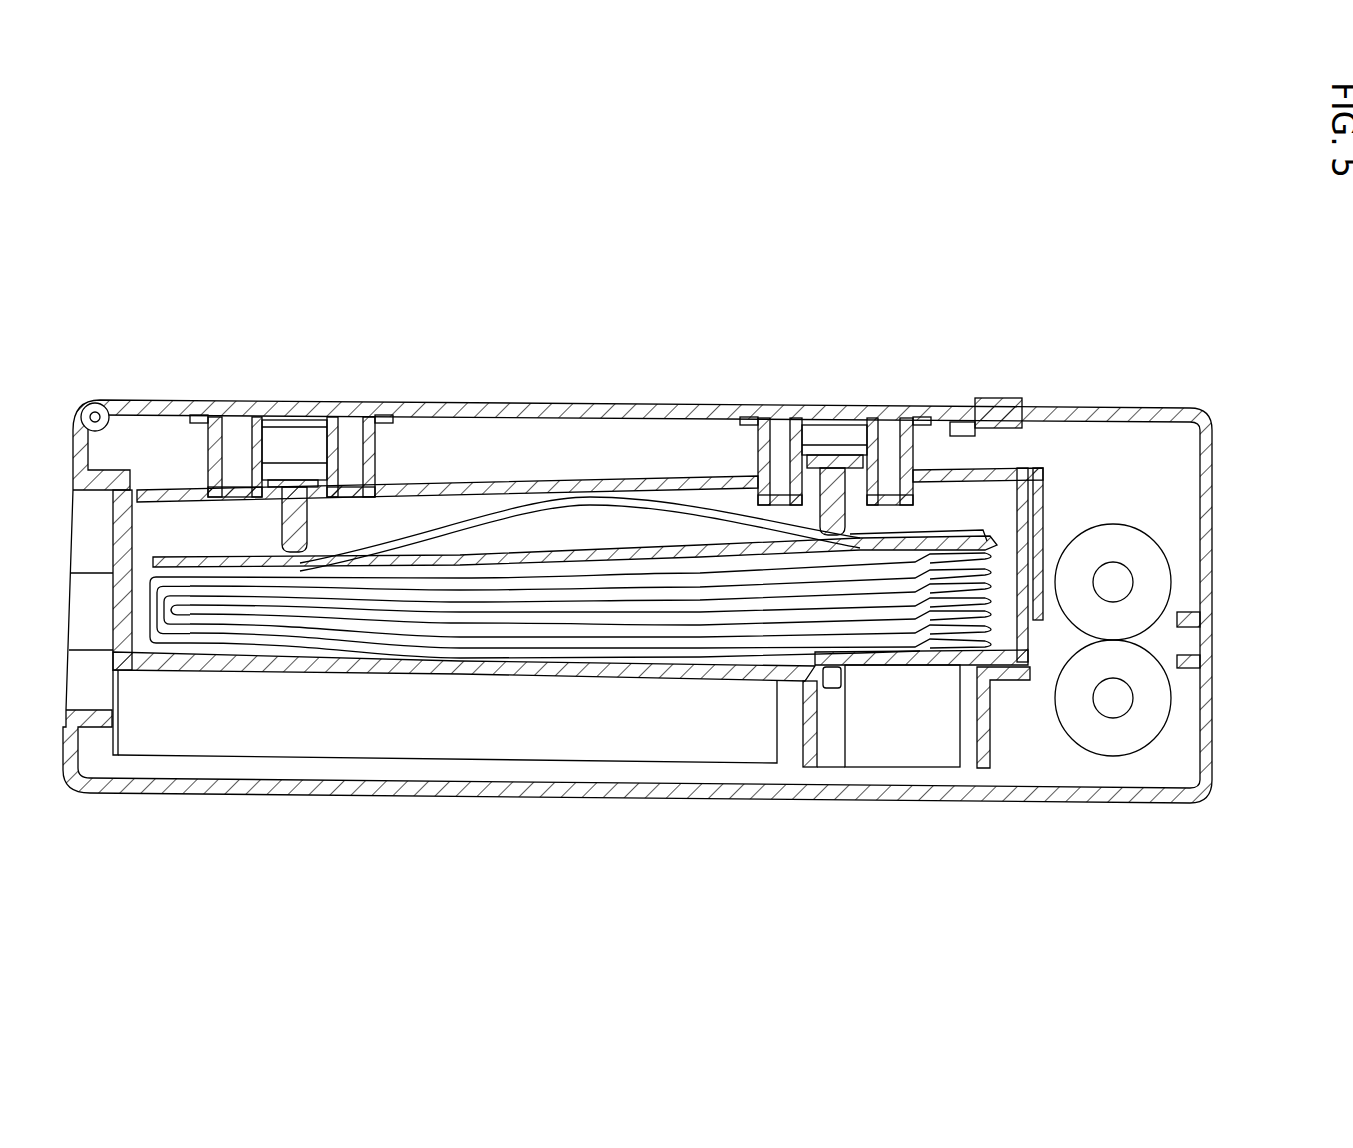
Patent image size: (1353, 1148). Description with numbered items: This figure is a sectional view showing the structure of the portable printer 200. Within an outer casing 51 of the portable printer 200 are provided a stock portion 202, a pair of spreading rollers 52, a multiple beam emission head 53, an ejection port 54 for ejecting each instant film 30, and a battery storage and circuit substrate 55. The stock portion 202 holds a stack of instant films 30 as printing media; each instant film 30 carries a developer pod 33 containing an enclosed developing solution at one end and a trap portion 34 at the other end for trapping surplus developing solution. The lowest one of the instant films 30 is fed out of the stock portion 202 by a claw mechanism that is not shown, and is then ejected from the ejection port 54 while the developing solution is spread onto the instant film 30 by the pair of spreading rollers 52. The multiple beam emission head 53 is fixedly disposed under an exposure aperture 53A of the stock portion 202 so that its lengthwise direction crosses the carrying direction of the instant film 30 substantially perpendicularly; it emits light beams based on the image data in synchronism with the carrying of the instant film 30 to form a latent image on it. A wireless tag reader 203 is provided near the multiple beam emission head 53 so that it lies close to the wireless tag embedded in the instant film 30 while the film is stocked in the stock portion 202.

The portable printer 200 is at (983, 349).
The stock portion 202 is at (705, 470).
The instant film 30 is at (466, 585).
The developer pod 33 is at (933, 652).
The trap portion 34 is at (170, 630).
The outer casing 51 is at (498, 797).
The pair of spreading rollers 52 is at (1118, 737).
The multiple beam emission head 53 is at (917, 743).
The exposure aperture 53A is at (948, 660).
The ejection port 54 is at (1192, 637).
The battery storage and circuit substrate 55 is at (322, 724).
The wireless tag reader 203 is at (827, 690).